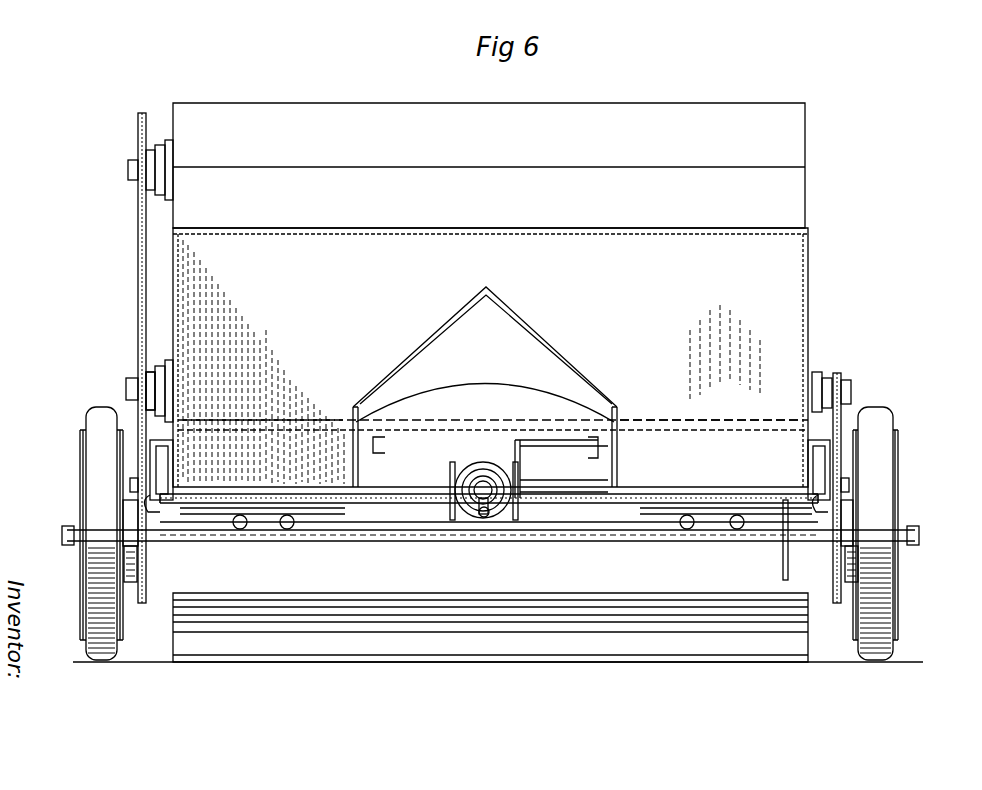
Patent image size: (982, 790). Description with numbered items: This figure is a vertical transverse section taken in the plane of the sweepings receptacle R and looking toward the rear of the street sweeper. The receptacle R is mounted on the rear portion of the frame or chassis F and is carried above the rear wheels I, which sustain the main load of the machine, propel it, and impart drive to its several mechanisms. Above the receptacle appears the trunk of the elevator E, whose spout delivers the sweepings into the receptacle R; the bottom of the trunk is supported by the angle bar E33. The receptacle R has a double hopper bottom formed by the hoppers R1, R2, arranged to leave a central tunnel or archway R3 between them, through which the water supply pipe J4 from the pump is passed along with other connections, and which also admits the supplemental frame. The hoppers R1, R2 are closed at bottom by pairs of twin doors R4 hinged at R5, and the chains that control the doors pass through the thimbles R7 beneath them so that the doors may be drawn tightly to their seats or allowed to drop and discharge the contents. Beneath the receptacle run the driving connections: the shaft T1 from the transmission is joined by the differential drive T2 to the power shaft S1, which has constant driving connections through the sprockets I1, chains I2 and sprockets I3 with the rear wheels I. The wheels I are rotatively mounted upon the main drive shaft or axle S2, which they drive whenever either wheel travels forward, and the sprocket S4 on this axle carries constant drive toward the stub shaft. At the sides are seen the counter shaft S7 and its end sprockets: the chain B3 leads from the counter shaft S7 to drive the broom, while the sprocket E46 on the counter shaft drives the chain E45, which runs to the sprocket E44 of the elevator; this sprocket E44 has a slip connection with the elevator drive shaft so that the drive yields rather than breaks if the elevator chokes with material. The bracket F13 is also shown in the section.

The elevator trunk E is at (489, 165).
The angle bar E33 is at (416, 625).
The sprocket E44 is at (136, 152).
The chain E45 is at (138, 252).
The sprocket E46 is at (126, 390).
The counter shaft S7 is at (142, 380).
The sweepings receptacle R is at (490, 357).
The hopper R1 is at (263, 408).
The hopper R2 is at (710, 408).
The central tunnel or archway R3 is at (485, 387).
The twin doors R4 is at (300, 508).
The hinge R5 is at (370, 498).
The thimbles R7 is at (243, 528).
The shaft T1 is at (484, 514).
The differential drive T2 is at (483, 462).
The bracket F13 is at (383, 452).
The water pipe J4 is at (540, 480).
The power shaft S1 is at (435, 522).
The main drive shaft or axle S2 is at (341, 541).
The sprocket S4 is at (783, 575).
The rear wheels I is at (100, 462).
The sprockets I1 is at (130, 485).
The chains I2 is at (123, 510).
The sprockets I3 is at (126, 548).
The frame or chassis F is at (160, 458).
The chain B3 is at (843, 380).